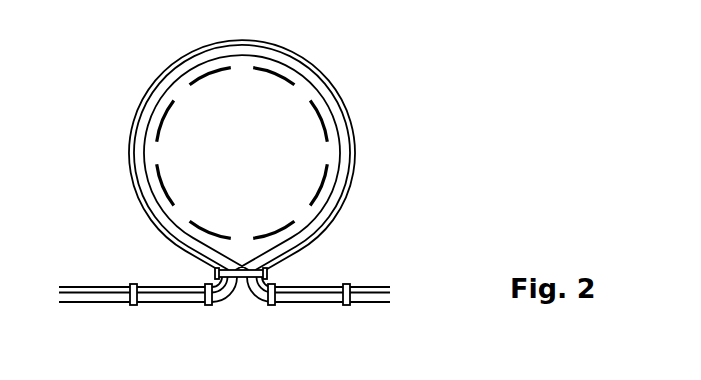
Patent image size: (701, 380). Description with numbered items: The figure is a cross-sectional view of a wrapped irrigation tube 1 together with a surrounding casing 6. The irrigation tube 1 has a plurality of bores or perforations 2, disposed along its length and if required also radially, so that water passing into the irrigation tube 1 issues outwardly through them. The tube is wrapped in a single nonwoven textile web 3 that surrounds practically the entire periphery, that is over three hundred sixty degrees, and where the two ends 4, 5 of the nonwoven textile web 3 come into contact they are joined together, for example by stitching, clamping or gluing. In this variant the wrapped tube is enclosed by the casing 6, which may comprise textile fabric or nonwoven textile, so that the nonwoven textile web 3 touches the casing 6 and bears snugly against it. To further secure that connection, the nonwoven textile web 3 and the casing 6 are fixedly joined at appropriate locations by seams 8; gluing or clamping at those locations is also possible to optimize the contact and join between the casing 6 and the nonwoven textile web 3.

The irrigation tube 1 is at (290, 166).
The perforations 2 is at (298, 90).
The nonwoven textile web 3 is at (337, 212).
The casing 6 is at (340, 118).
The first end of the nonwoven textile web 4 is at (186, 298).
The second end of the nonwoven textile web 5 is at (316, 298).
The seams 8 is at (276, 293).